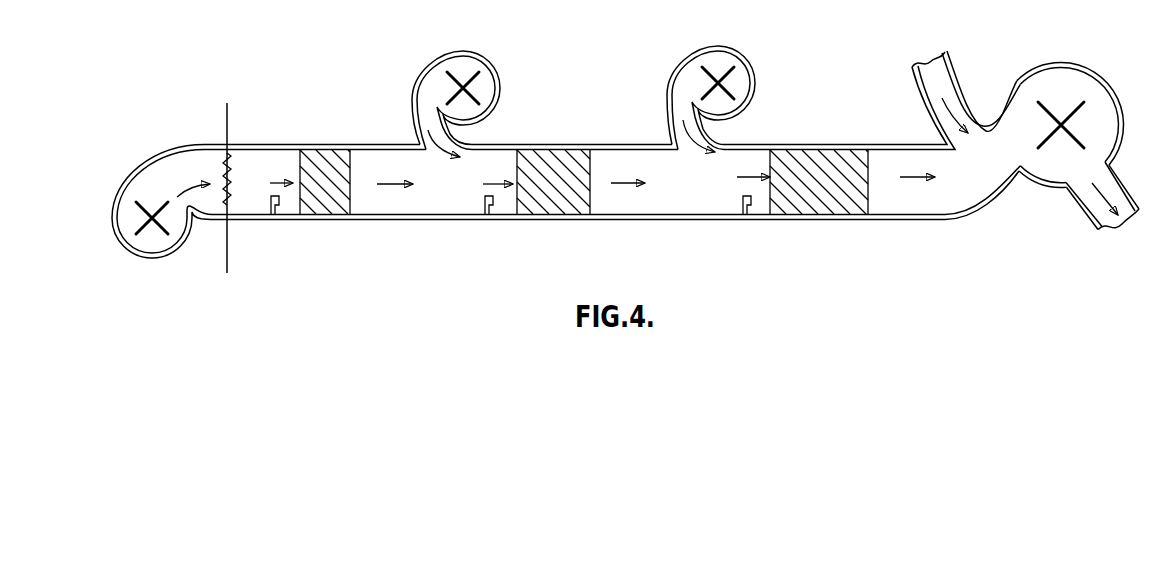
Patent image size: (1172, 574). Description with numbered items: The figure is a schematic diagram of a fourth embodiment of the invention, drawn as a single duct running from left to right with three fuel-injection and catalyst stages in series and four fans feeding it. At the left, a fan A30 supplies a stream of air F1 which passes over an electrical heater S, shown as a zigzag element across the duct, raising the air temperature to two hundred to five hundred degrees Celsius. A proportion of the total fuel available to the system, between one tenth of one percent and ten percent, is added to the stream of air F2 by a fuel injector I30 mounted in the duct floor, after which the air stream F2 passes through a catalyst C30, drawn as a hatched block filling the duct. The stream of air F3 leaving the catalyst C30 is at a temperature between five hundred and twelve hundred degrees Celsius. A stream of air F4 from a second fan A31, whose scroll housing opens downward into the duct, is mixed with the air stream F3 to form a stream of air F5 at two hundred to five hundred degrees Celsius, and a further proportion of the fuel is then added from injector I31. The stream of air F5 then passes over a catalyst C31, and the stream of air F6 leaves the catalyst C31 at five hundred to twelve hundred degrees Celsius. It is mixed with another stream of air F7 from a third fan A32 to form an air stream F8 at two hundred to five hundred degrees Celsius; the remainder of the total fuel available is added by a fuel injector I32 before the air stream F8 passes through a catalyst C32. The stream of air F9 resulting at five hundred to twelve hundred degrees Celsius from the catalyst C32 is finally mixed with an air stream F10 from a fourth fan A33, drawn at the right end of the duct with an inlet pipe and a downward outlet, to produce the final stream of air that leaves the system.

The electrical heater S is at (226, 120).
The fan A30 is at (150, 242).
The second fan A31 is at (488, 88).
The third fan A32 is at (745, 92).
The fourth fan A33 is at (1110, 100).
The catalyst C30 is at (333, 206).
The catalyst C31 is at (570, 206).
The catalyst C32 is at (840, 204).
The fuel injector I30 is at (265, 216).
The injector I31 is at (481, 216).
The fuel injector I32 is at (737, 216).
The stream of air F1 is at (193, 178).
The stream of air F2 is at (280, 172).
The stream of air F3 is at (395, 172).
The stream of air F4 is at (420, 138).
The stream of air F5 is at (498, 172).
The stream of air F6 is at (625, 172).
The stream of air F7 is at (677, 136).
The air stream F8 is at (751, 168).
The stream of air F9 is at (914, 165).
The air stream F10 is at (922, 109).